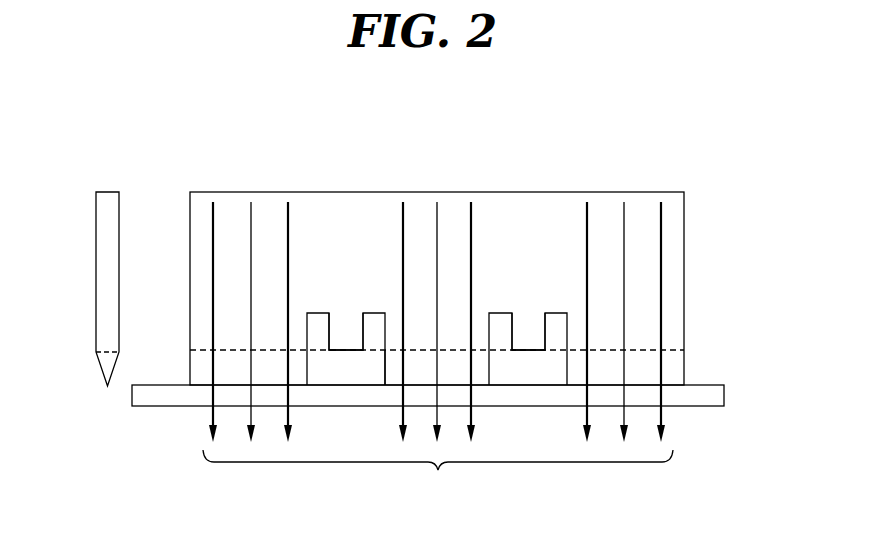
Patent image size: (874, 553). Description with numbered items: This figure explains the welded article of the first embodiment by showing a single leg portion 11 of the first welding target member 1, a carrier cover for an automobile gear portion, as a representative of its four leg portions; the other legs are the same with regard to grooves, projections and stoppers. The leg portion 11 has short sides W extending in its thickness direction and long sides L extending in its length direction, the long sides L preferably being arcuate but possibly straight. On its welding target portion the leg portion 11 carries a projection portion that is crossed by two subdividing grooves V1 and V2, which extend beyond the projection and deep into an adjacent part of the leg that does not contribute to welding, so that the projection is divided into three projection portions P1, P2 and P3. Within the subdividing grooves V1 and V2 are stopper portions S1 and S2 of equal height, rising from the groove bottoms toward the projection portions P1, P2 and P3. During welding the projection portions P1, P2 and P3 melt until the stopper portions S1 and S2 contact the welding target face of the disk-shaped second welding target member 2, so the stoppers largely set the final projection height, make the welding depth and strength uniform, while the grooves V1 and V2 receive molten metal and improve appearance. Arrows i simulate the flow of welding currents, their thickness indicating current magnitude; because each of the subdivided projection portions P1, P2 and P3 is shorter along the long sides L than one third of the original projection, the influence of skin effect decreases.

The first welding target member 1 is at (64, 254).
The second welding target member 2 is at (750, 385).
The leg portion 11 is at (677, 239).
The short sides W is at (107, 192).
The long sides L is at (340, 192).
The projection portion P1 is at (102, 366).
The projection portion P2 is at (392, 365).
The projection portion P3 is at (679, 370).
The stopper portion S1 is at (338, 342).
The stopper portion S2 is at (532, 338).
The subdividing groove V1 is at (347, 368).
The subdividing groove V2 is at (517, 367).
The arrows i is at (438, 477).